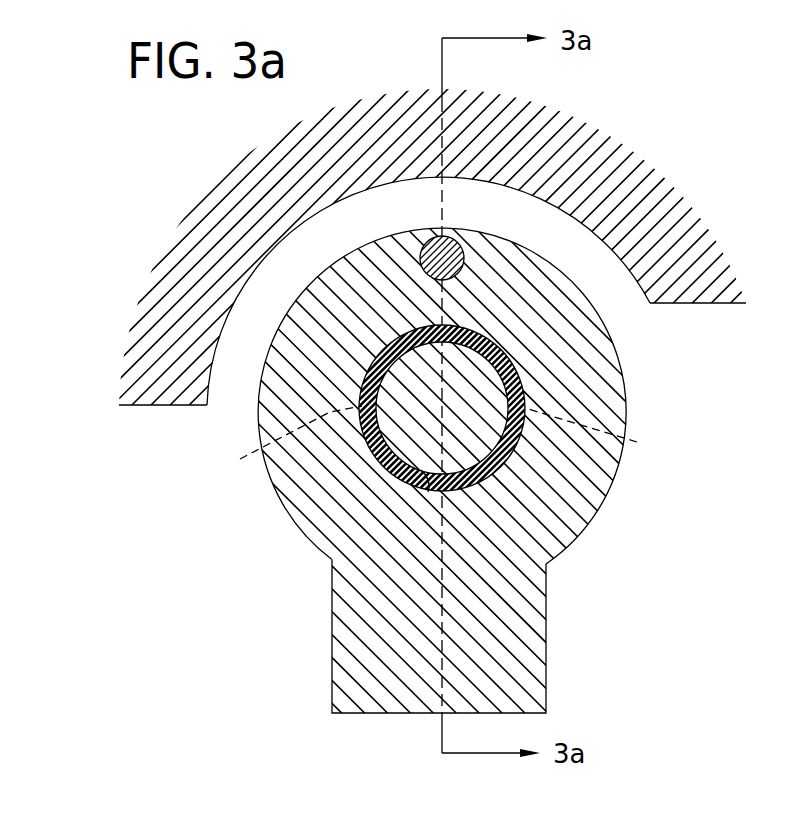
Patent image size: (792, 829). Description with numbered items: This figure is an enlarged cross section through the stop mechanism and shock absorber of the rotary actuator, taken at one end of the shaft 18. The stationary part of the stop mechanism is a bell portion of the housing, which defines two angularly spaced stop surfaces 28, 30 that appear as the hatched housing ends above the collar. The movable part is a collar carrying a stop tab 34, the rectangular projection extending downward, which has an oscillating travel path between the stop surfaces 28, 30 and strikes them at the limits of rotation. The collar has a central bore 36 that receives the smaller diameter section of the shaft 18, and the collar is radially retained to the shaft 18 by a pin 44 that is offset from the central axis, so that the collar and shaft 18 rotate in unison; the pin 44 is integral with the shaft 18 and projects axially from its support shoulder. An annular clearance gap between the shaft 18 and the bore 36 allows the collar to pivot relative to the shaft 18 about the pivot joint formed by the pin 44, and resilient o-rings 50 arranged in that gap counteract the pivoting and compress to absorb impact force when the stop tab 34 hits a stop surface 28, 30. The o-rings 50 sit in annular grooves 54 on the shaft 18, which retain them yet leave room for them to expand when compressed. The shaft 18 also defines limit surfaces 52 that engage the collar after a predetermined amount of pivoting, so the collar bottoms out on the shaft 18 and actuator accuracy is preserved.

The shaft 18 is at (480, 398).
The stop surface 28 is at (704, 305).
The stop surface 30 is at (163, 407).
The stop tab 34 is at (546, 659).
The central bore 36 is at (367, 458).
The pin 44 is at (423, 242).
The resilient o-rings 50 is at (360, 382).
The limit surfaces 52 is at (440, 446).
The annular grooves 54 is at (421, 470).